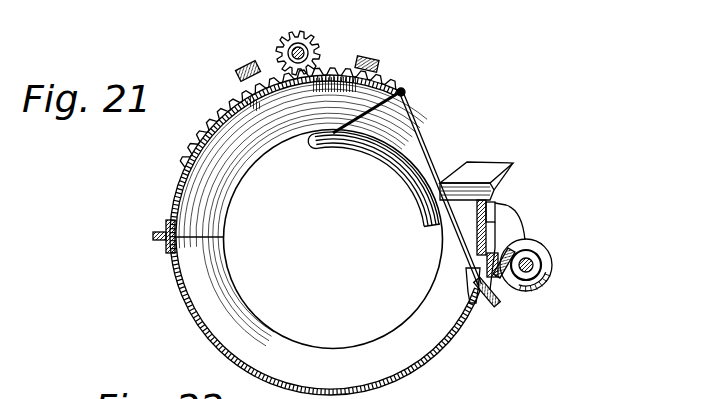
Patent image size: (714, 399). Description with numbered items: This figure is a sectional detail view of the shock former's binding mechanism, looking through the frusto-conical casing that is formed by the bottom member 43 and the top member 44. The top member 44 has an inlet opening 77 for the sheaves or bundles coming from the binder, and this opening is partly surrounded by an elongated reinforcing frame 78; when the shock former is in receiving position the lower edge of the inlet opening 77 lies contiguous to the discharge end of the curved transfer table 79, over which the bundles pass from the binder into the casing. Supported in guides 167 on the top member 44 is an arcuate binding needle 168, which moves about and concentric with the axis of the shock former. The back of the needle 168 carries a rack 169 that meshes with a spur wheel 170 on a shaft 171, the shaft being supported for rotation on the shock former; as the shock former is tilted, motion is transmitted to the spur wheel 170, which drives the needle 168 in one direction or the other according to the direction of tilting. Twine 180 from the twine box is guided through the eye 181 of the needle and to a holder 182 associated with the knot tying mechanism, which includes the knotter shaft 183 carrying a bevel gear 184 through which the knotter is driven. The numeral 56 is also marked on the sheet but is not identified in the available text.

The bottom member 43 is at (430, 366).
The top member 44 is at (180, 190).
The frame 56 is at (138, 5).
The inlet opening 77 is at (382, 120).
The reinforcing frame 78 is at (381, 158).
The table 79 is at (506, 172).
The guides 167 is at (249, 65).
The binding needle 168 is at (292, 82).
The rack 169 is at (240, 100).
The spur wheel 170 is at (312, 42).
The shaft 171 is at (298, 47).
The twine 180 is at (430, 152).
The eye 181 is at (407, 90).
The holder 182 is at (476, 270).
The knotter shaft 183 is at (542, 267).
The bevel gear 184 is at (545, 250).